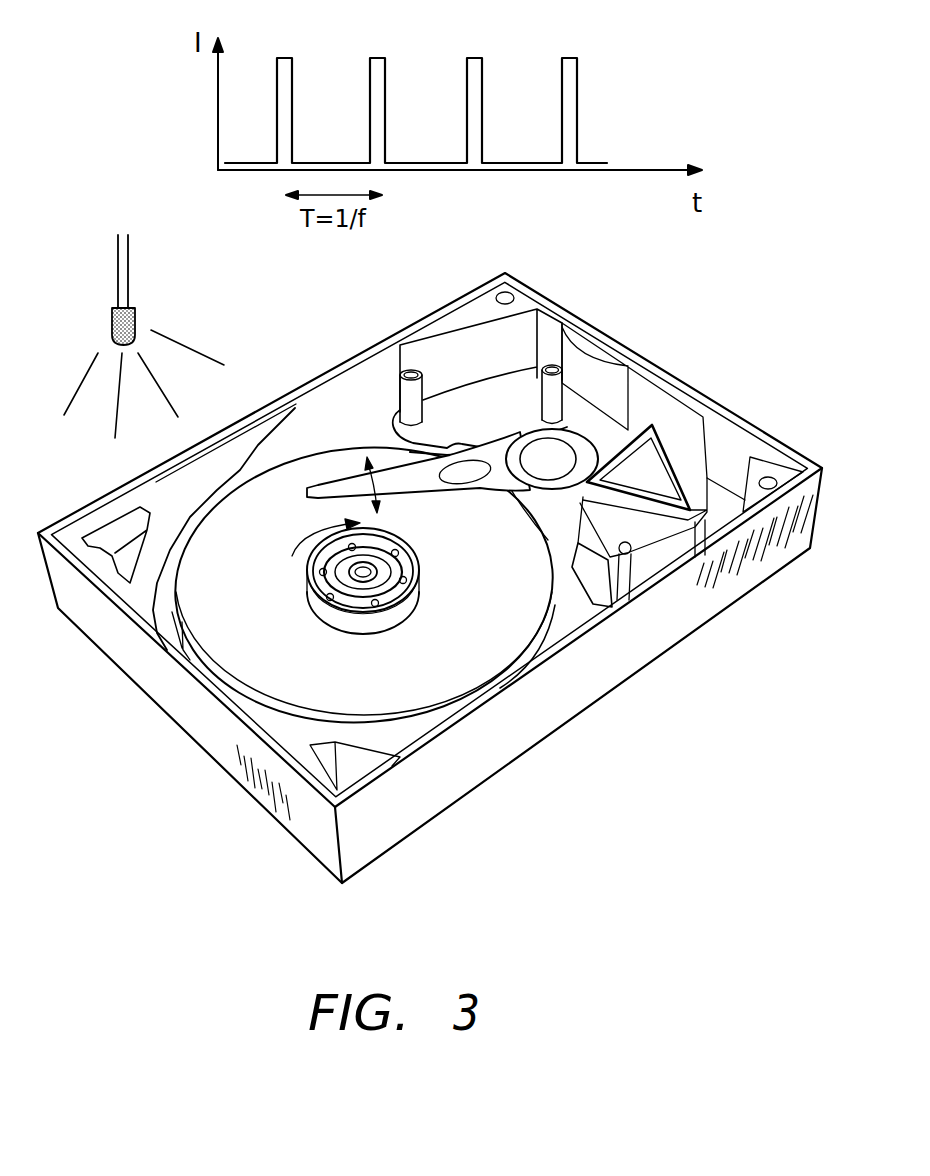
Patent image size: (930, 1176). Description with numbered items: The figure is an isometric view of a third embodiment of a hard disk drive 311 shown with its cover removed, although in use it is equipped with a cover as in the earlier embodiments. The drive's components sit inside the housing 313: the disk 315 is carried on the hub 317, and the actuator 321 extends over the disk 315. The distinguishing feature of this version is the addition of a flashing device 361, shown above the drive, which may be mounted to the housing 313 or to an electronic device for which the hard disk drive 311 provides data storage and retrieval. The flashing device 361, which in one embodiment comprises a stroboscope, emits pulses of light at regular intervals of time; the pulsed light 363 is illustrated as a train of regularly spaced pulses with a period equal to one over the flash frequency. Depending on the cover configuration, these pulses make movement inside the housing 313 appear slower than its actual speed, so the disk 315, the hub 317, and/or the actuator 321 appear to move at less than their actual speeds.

The hard disk drive 311 is at (735, 325).
The housing 313 is at (592, 672).
The disk 315 is at (220, 652).
The hub 317 is at (422, 568).
The actuator 321 is at (388, 455).
The flashing device 361 is at (112, 318).
The pulsed light signal 363 is at (570, 58).